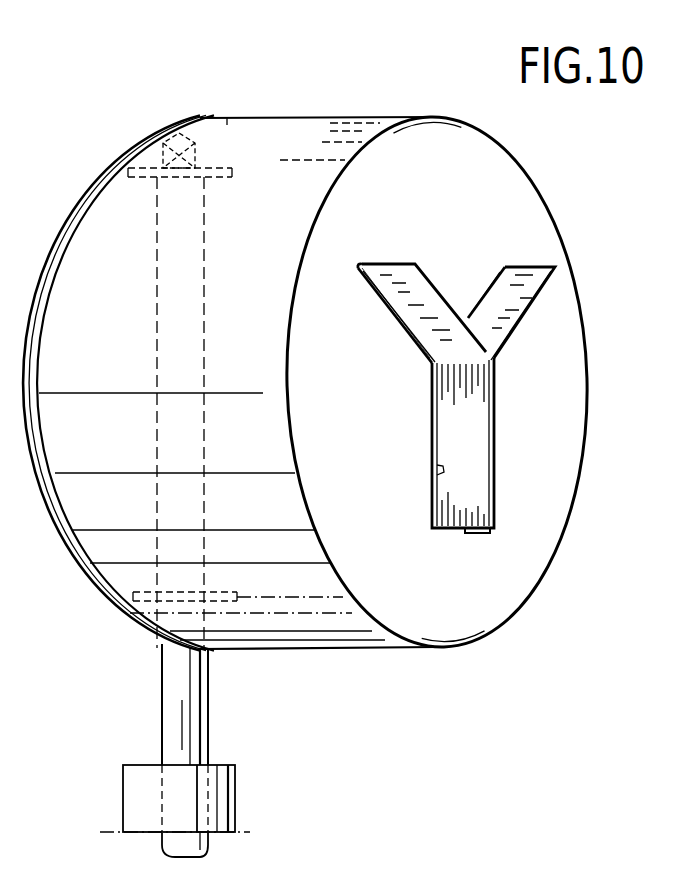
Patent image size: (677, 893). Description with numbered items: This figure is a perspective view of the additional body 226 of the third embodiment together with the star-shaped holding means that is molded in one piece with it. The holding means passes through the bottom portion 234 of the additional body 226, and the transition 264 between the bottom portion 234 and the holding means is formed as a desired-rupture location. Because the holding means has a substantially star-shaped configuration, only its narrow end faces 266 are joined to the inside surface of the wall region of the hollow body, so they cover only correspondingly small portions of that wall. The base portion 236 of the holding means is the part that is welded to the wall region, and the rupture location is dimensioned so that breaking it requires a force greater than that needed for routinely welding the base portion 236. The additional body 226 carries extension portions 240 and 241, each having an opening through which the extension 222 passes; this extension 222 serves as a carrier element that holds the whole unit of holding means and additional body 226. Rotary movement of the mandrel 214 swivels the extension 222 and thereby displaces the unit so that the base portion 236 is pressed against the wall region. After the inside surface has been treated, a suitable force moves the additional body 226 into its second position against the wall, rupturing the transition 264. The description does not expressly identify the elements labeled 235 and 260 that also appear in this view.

The additional body 226 is at (272, 122).
The bottom portion 234 is at (565, 420).
The extension portion 241 is at (225, 180).
The extension portion 240 is at (230, 587).
The narrow end faces 266 is at (434, 280).
The channel arms 235 is at (488, 282).
The base portion 236 is at (410, 300).
The transition 264 is at (437, 475).
The foot of stem 260 is at (475, 533).
The extension 222 is at (173, 718).
The mandrel 214 is at (225, 797).